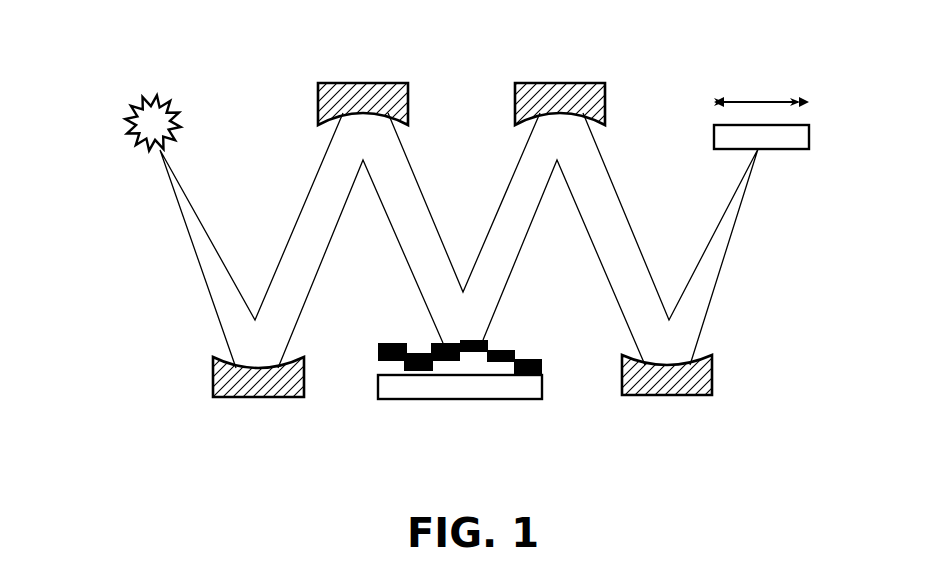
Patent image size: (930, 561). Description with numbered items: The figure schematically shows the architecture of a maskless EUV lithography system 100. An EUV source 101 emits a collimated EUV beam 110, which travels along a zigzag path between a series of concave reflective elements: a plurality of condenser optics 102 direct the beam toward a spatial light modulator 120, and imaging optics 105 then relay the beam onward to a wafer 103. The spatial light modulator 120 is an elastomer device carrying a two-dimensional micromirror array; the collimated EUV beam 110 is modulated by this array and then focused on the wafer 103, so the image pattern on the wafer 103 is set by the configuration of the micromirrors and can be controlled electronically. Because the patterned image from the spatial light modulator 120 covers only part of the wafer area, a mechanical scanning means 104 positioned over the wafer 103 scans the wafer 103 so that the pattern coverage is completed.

The maskless EUV lithography system 100 is at (762, 485).
The EUV source 101 is at (130, 91).
The condenser optics 102 is at (388, 94).
The wafer 103 is at (790, 143).
The mechanical scanning means 104 is at (761, 89).
The imaging optics 105 is at (700, 376).
The collimated EUV beam 110 is at (186, 258).
The spatial light modulator 120 is at (400, 408).